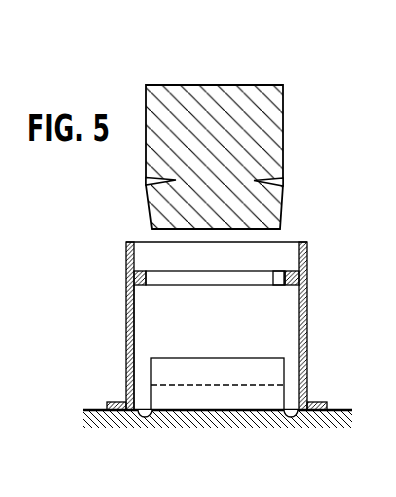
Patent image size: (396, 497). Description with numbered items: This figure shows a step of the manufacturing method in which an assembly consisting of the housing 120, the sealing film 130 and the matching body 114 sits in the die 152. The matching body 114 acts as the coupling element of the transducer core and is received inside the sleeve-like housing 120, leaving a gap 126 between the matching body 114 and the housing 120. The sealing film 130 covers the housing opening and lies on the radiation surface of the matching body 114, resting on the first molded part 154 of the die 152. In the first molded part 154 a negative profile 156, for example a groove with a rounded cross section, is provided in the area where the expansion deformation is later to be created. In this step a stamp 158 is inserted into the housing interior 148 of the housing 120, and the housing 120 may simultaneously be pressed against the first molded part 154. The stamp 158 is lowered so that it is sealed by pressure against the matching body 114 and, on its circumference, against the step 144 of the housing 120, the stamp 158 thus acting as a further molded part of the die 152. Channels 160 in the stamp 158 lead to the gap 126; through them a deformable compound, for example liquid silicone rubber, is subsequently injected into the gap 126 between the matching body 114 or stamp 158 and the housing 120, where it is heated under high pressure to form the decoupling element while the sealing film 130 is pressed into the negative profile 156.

The matching body 114 is at (219, 370).
The housing 120 is at (211, 326).
The gap 126 is at (137, 382).
The sealing film 130 is at (147, 408).
The step 144 is at (133, 280).
The housing interior 148 is at (254, 307).
The die 152 is at (213, 440).
The first molded part 154 is at (87, 411).
The negative profile 156 is at (145, 418).
The stamp 158 is at (276, 116).
The channels 160 is at (150, 182).